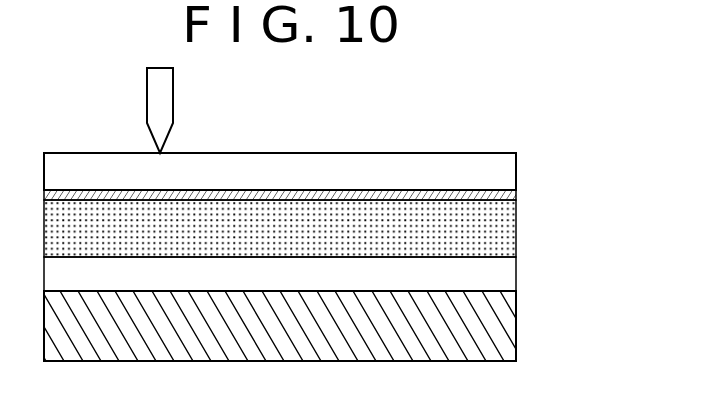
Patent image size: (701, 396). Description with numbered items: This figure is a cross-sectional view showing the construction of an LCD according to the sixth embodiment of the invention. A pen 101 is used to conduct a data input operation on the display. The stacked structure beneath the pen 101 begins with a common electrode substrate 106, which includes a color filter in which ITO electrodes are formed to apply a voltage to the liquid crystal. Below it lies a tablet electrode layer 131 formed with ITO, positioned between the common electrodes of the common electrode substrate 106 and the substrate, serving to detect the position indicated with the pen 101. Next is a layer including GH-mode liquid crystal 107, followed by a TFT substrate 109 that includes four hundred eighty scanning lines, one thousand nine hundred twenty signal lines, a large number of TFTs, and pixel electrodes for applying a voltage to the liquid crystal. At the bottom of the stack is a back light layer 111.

The pen 101 is at (173, 107).
The common electrode substrate 106 is at (515, 164).
The tablet electrode layer 131 is at (515, 198).
The GH-mode liquid crystal 107 is at (508, 238).
The TFT substrate 109 is at (508, 279).
The back light layer 111 is at (508, 333).